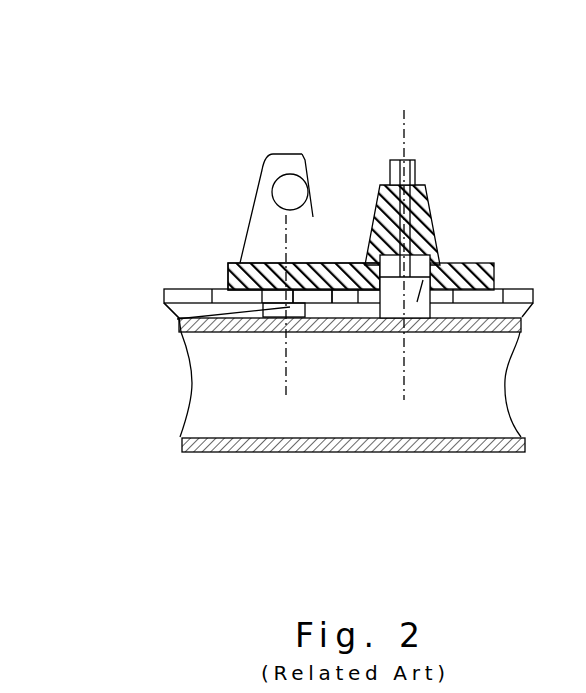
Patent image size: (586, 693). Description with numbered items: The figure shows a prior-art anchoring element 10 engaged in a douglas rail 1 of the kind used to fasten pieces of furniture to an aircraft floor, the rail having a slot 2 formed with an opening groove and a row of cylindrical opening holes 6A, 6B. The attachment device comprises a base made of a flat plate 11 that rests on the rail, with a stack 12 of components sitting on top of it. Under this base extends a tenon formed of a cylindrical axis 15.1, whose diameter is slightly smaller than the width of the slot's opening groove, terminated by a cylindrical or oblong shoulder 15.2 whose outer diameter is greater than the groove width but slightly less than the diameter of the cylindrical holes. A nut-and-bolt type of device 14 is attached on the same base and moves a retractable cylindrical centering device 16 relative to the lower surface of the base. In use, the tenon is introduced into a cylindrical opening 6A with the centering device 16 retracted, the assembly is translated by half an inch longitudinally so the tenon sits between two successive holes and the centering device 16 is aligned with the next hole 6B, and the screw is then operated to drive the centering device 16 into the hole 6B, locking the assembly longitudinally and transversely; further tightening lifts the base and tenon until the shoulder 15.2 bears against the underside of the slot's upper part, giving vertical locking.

The housing 1 is at (212, 438).
The flange plate 2 is at (510, 315).
The cylindrical opening 6A is at (330, 293).
The cylindrical opening hole 6B is at (405, 350).
The ultrasonic transducer assembly 10 is at (328, 68).
The flat plate 11 is at (243, 264).
The piezoelectric element stack 12 is at (354, 263).
The nut-and-bolt type of device 14 is at (416, 160).
The cylindrical axis 15.1 is at (263, 215).
The cylindrical or oblong shoulder 15.2 is at (178, 323).
The retractable cylindrical centering device 16 is at (437, 222).